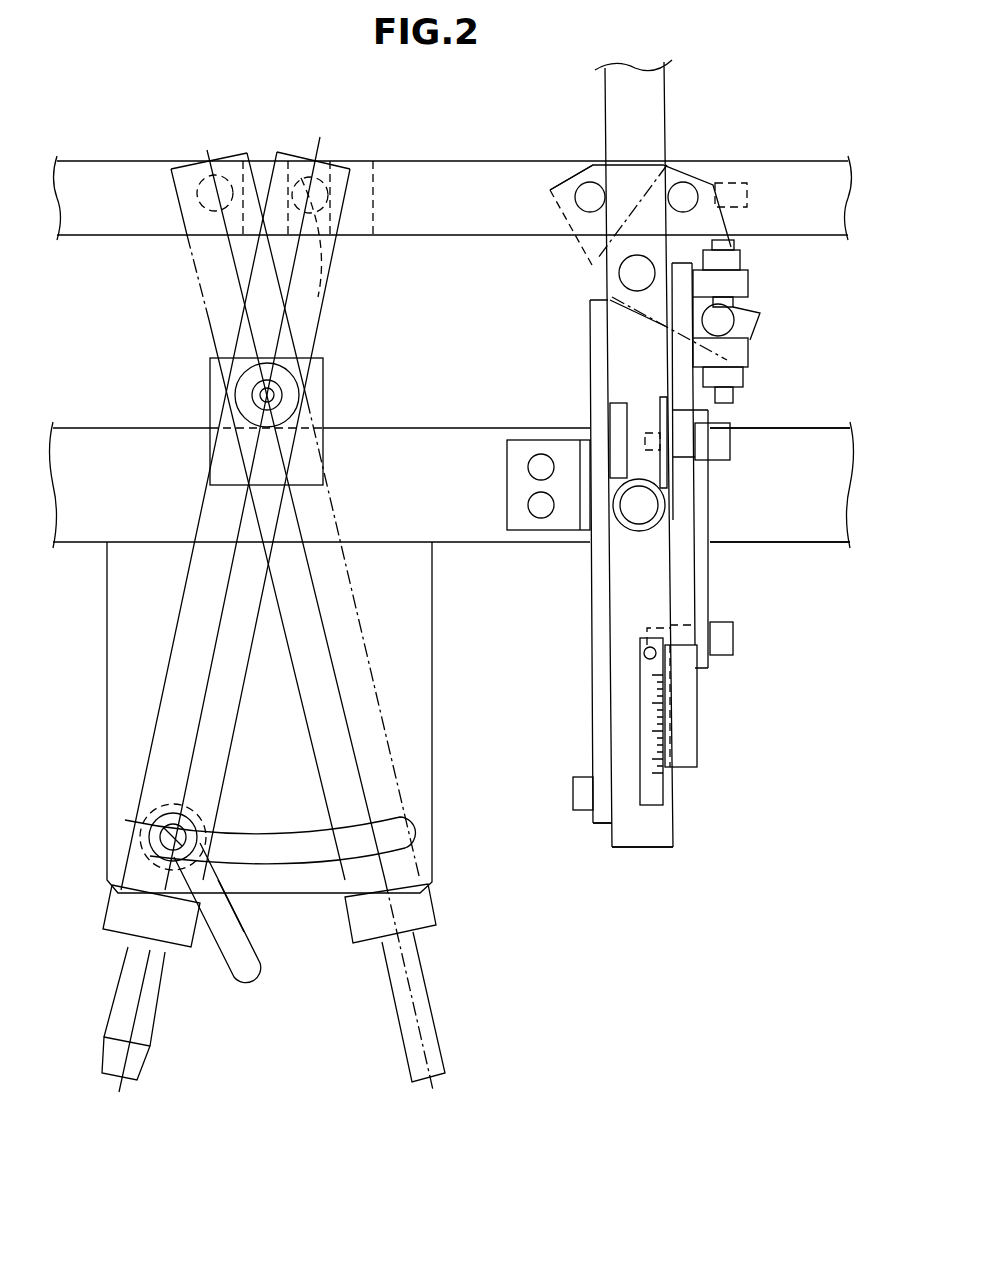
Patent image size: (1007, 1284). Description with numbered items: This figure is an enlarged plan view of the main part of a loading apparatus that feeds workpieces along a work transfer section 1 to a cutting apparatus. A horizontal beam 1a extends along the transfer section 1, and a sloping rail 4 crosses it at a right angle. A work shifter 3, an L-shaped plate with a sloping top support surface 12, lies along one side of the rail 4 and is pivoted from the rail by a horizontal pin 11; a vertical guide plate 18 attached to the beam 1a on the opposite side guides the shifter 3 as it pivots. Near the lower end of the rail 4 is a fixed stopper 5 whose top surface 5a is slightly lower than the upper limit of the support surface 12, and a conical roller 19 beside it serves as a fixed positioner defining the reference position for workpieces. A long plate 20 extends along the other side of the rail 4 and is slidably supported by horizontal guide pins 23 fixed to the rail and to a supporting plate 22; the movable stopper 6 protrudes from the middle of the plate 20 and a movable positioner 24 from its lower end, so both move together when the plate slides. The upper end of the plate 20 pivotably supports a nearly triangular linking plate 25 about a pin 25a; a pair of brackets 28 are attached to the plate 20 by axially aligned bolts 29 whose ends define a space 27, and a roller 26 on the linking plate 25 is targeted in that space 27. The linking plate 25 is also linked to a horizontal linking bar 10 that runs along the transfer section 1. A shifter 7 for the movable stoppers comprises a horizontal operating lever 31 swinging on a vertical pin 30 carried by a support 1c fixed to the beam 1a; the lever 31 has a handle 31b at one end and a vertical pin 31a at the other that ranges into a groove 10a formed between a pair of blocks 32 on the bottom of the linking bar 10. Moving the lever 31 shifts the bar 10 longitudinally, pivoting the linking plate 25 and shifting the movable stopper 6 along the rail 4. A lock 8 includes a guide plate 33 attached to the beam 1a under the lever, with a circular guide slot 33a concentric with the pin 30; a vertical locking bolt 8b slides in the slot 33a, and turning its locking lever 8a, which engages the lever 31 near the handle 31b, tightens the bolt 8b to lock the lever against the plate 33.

The work transfer section 1 is at (816, 591).
The horizontal beam 1a is at (86, 428).
The support 1c is at (210, 393).
The work shifter 3 is at (592, 621).
The sloping rail 4 is at (635, 110).
The fixed stopper 5 is at (606, 422).
The top surface of fixed stopper 5a is at (607, 400).
The movable stopper 6 is at (683, 472).
The shifter for movable stoppers 7 is at (98, 1055).
The lock 8 is at (225, 960).
The locking lever 8a is at (232, 937).
The locking bolt 8b is at (160, 855).
The horizontal linking bar 10 is at (114, 185).
The groove 10a is at (323, 296).
The horizontal pin 11 is at (587, 780).
The top support surface 12 is at (598, 558).
The vertical guide plate 18 is at (580, 455).
The conical roller 19 is at (632, 505).
The long plate 20 is at (720, 641).
The supporting plate 22 is at (704, 553).
The horizontal guide pin 23 is at (720, 446).
The movable positioner 24 is at (688, 707).
The linking plate 25 is at (700, 200).
The pin 25a is at (590, 263).
The roller 26 is at (722, 321).
The space 27 is at (630, 270).
The bracket 28 is at (752, 284).
The bolt 29 is at (722, 238).
The vertical pin 30 is at (250, 372).
The horizontal operating lever 31 is at (195, 620).
The vertical pin 31a is at (295, 160).
The handle 31b is at (118, 1007).
The block 32 is at (262, 170).
The guide plate 33 is at (150, 712).
The horizontal circular guide slot 33a is at (281, 857).